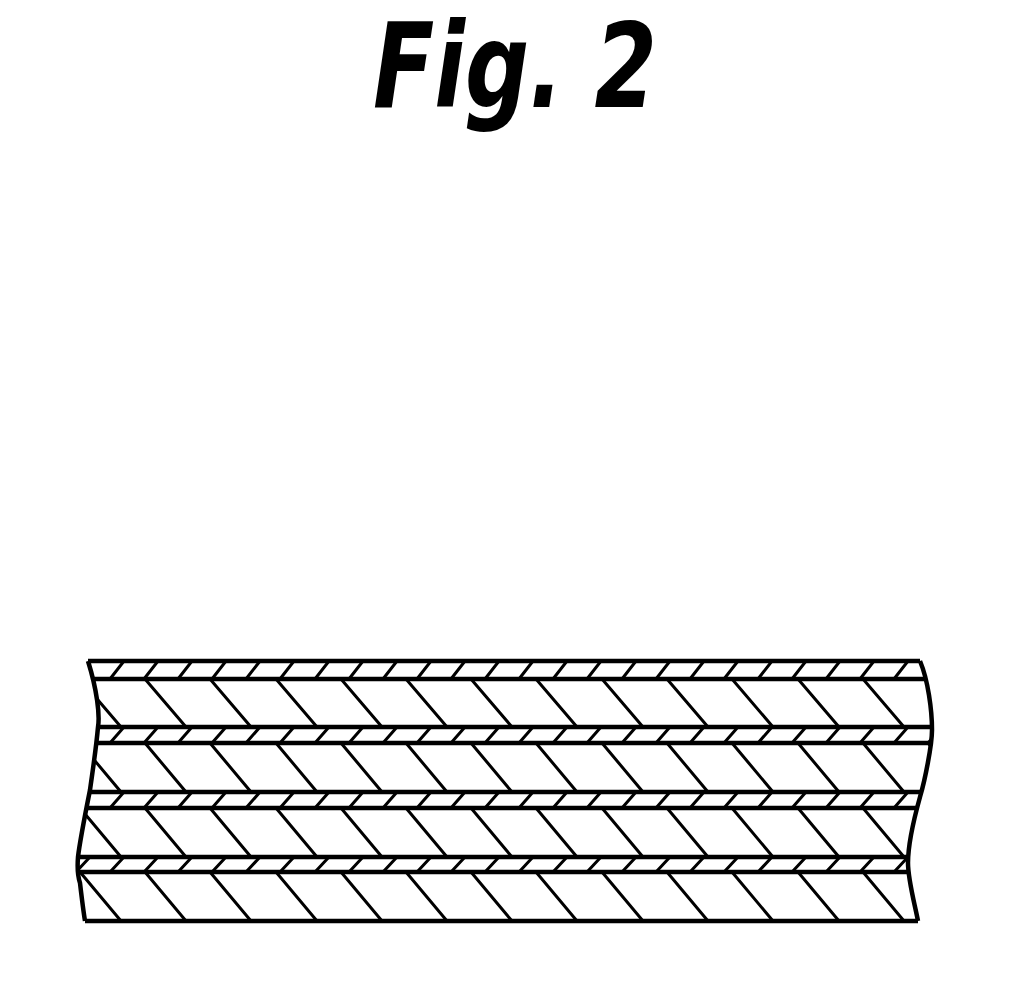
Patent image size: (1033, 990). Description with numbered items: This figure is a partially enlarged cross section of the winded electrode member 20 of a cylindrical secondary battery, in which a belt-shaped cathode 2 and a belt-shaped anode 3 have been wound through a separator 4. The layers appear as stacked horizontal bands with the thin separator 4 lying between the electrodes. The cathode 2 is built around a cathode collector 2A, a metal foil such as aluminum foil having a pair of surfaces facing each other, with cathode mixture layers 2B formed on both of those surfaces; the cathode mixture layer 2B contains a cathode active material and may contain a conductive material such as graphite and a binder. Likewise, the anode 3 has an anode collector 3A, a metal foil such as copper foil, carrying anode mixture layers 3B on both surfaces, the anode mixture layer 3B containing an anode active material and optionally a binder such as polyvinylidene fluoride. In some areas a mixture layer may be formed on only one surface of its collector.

The winded electrode member 20 is at (792, 402).
The cathode 2 is at (155, 542).
The cathode collector 2A is at (178, 723).
The cathode mixture layer 2B is at (368, 697).
The anode 3 is at (475, 542).
The anode collector 3A is at (497, 858).
The anode mixture layer 3B is at (710, 827).
The separator 4 is at (843, 665).